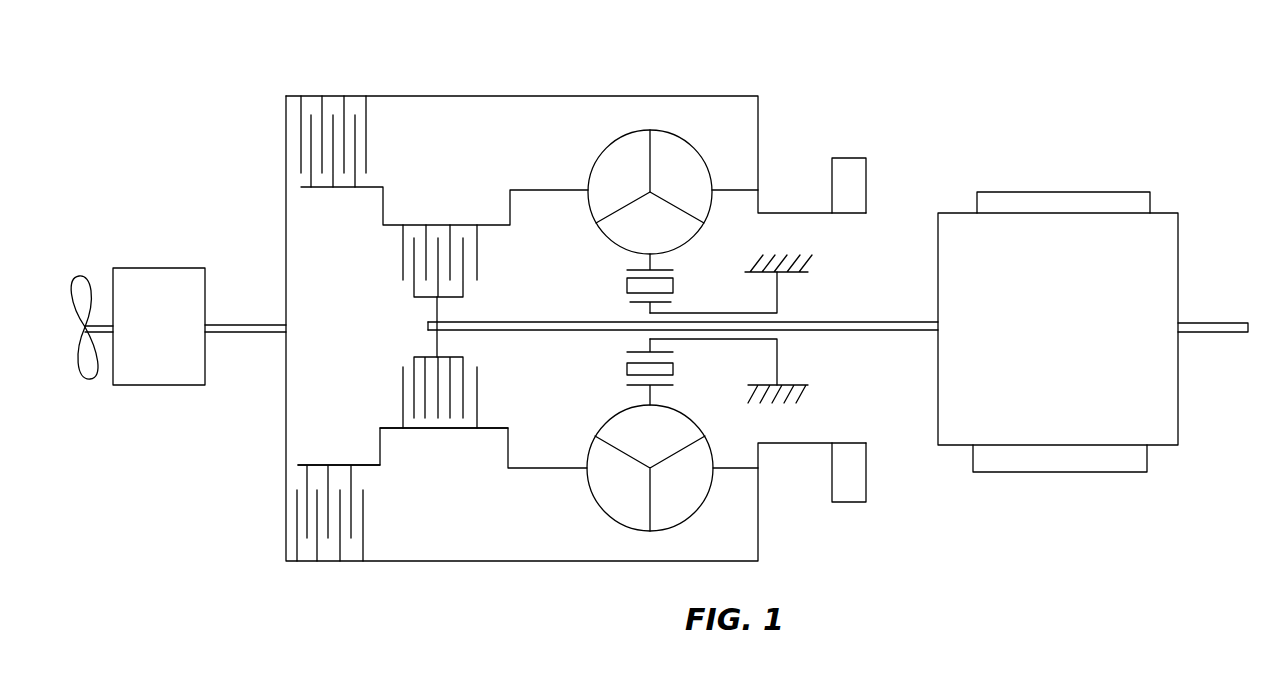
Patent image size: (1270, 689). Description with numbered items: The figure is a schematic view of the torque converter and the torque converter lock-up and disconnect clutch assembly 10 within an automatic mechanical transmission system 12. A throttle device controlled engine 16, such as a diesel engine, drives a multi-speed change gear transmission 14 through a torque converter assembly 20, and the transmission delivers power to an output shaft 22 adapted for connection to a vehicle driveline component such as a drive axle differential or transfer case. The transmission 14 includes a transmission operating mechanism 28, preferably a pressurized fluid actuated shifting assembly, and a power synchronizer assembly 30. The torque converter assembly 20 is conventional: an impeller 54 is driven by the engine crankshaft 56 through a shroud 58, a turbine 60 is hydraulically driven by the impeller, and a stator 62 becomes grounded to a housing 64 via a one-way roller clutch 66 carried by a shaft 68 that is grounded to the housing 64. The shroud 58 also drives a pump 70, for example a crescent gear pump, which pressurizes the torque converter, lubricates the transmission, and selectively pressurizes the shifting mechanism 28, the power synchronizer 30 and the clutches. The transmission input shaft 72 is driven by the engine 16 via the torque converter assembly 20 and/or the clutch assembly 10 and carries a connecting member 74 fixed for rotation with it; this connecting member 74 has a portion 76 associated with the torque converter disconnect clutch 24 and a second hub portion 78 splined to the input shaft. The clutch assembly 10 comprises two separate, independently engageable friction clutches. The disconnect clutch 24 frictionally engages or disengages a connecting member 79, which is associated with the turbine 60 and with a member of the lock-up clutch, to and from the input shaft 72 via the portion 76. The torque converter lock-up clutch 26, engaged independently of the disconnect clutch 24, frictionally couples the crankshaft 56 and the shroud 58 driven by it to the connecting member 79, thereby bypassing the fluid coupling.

The torque converter lock-up and disconnect clutch assembly 10 is at (389, 460).
The automatic mechanical transmission system 12 is at (922, 111).
The multi-speed change gear transmission 14 is at (1165, 277).
The engine 16 is at (170, 277).
The torque converter assembly 20 is at (647, 89).
The output shaft 22 is at (1235, 332).
The torque converter disconnect clutch 24 is at (458, 220).
The torque converter lock-up clutch 26 is at (369, 535).
The transmission operating mechanism 28 is at (1053, 197).
The power synchronizer assembly 30 is at (1058, 458).
The impeller 54 is at (687, 165).
The engine crankshaft 56 is at (244, 322).
The shroud 58 is at (506, 95).
The turbine 60 is at (603, 176).
The stator 62 is at (617, 232).
The housing 64 is at (812, 263).
The one-way roller clutch 66 is at (627, 370).
The shaft 68 is at (705, 340).
The pump 70 is at (858, 180).
The transmission input shaft 72 is at (852, 333).
The connecting member 74 is at (418, 337).
The portion of connecting member 76 is at (450, 352).
The hub portion 78 is at (440, 310).
The connecting member 79 is at (412, 430).